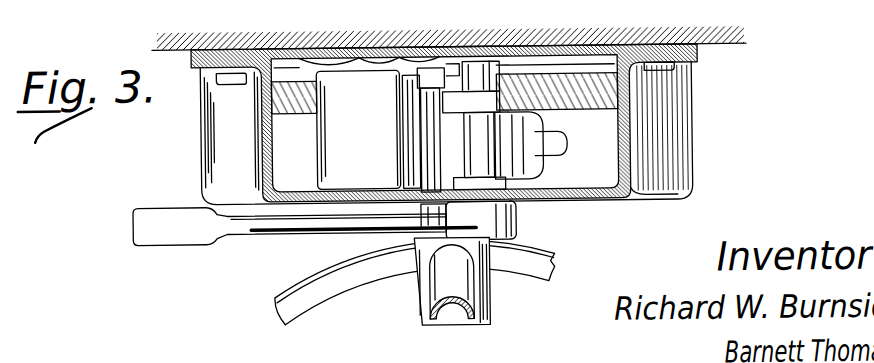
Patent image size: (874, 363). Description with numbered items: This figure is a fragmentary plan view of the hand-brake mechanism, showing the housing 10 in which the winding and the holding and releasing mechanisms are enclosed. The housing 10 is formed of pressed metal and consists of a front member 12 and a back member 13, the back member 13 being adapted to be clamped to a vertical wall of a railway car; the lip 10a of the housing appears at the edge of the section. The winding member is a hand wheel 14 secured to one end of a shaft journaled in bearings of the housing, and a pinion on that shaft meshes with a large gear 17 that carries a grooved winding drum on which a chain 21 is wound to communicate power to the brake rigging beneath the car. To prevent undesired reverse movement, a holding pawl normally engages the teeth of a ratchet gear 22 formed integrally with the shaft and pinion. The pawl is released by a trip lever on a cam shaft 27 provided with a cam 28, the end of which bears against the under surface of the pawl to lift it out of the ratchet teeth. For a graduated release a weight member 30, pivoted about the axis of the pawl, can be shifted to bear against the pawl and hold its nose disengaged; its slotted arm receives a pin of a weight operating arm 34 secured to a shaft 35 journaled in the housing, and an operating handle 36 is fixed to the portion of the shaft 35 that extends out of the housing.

The housing 10 is at (582, 201).
The housing flange lip 10a is at (703, 90).
The front member 12 is at (620, 200).
The back member 13 is at (589, 63).
The hand wheel 14 is at (283, 290).
The large gear 17 is at (280, 100).
The chain 21 is at (567, 145).
The ratchet gear 22 is at (520, 170).
The cam shaft 27 is at (491, 80).
The cam 28 is at (458, 113).
The weight member 30 is at (397, 160).
The weight operating arm 34 is at (432, 68).
The shaft 35 is at (414, 206).
The operating handle 36 is at (436, 210).